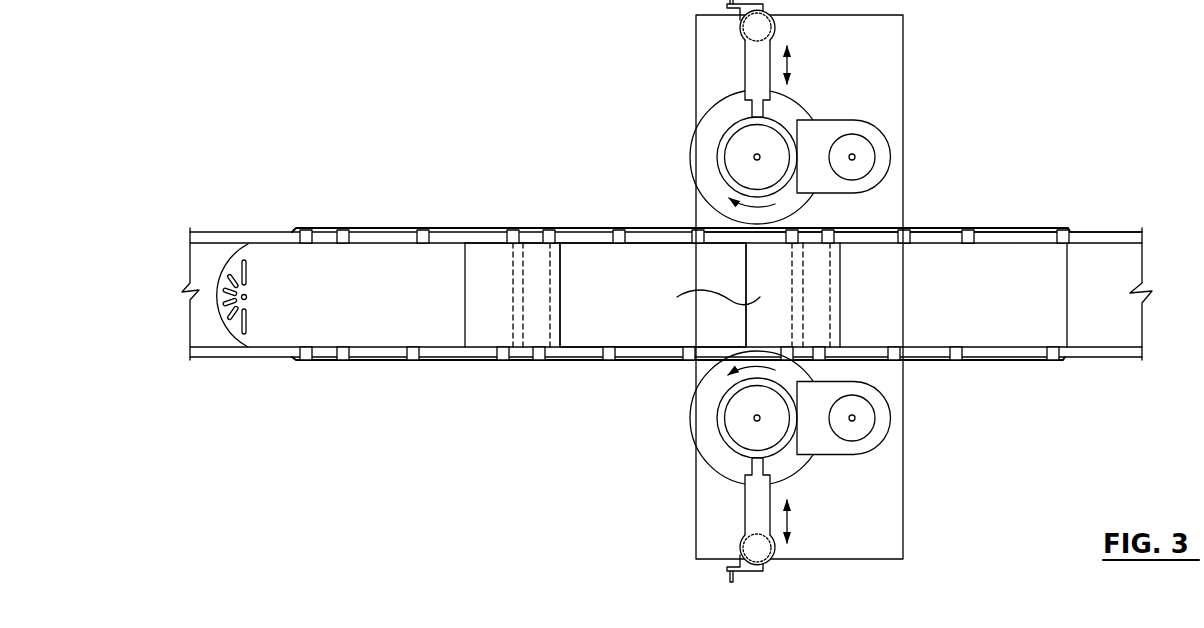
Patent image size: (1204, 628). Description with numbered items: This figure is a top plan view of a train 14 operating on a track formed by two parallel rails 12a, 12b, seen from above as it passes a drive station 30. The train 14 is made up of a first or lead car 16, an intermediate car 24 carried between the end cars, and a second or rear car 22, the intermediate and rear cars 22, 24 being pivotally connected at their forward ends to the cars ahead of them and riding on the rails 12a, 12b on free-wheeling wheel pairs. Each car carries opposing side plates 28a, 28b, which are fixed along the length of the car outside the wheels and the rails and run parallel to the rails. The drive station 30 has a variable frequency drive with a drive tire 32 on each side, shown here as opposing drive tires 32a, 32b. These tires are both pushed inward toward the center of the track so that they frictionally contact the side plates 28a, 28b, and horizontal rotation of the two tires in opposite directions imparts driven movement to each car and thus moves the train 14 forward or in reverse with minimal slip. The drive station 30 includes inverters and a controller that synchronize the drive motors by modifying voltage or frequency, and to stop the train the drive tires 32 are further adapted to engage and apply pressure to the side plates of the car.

The rail 12a is at (1118, 232).
The rail 12b is at (1120, 347).
The train 14 is at (588, 221).
The lead car 16 is at (410, 257).
The rear car 22 is at (985, 230).
The intermediate car 24 is at (593, 328).
The side plate 28a is at (449, 227).
The side plate 28b is at (299, 362).
The drive station 30 is at (922, 137).
The drive tire 32 is at (788, 107).
The drive tire 32a is at (722, 108).
The drive tire 32b is at (793, 462).